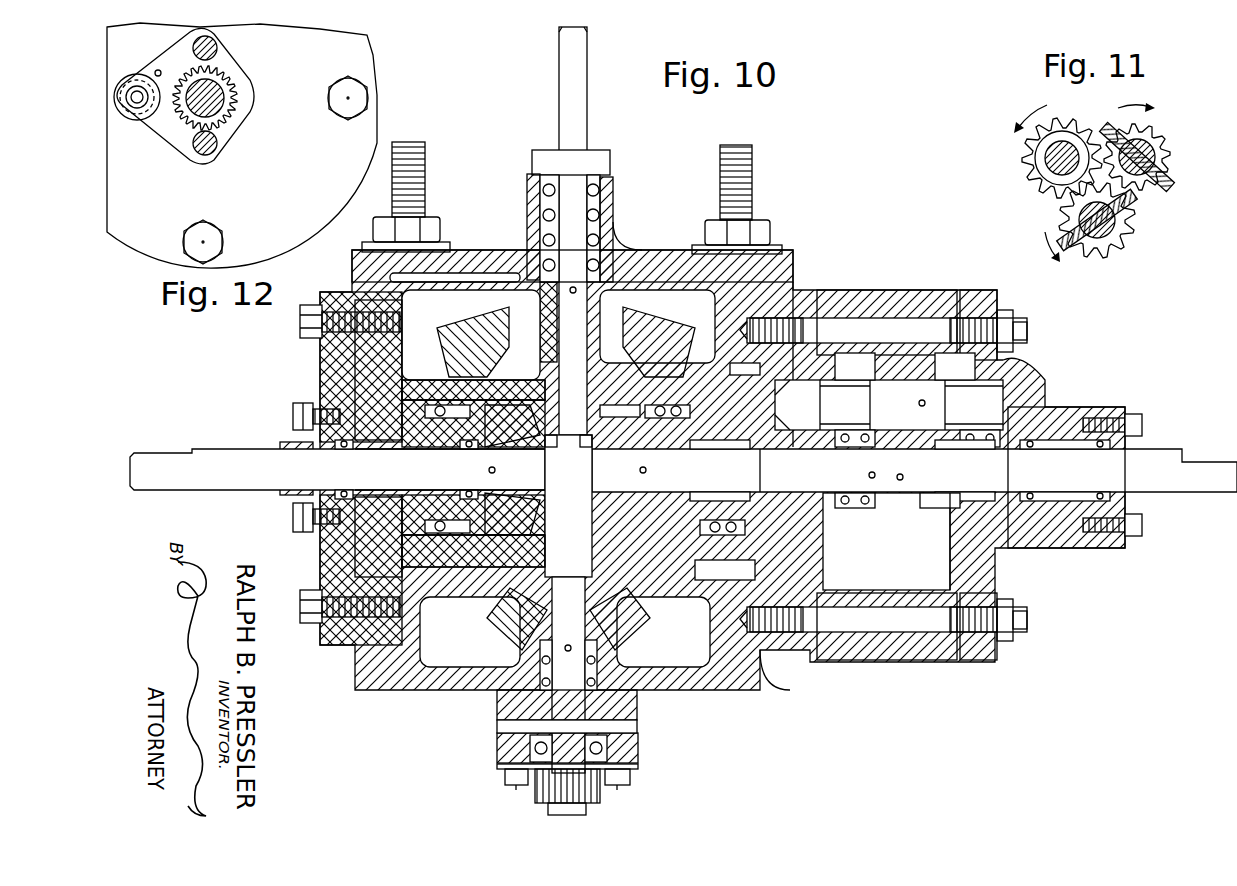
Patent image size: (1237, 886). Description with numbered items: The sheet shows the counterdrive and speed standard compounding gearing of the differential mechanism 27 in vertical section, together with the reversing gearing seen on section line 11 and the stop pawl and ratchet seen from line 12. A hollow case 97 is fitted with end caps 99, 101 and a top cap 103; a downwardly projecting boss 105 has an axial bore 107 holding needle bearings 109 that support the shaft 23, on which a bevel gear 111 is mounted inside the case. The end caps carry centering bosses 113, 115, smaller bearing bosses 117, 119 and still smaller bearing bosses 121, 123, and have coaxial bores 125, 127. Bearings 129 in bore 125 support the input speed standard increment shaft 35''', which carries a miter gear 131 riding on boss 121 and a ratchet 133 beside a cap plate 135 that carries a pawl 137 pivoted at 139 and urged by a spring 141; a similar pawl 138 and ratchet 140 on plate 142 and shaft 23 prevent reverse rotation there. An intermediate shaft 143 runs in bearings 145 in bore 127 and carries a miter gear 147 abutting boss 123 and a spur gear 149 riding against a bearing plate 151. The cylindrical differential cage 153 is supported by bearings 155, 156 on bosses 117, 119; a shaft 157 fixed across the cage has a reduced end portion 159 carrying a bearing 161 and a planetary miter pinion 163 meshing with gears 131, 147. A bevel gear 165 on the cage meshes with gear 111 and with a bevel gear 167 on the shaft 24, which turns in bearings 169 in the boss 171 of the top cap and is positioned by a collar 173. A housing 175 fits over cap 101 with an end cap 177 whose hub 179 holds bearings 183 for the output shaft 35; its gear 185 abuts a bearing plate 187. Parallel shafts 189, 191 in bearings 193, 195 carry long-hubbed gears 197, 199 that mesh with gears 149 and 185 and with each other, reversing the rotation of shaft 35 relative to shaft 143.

In FIG. 10, the section line 11— 11 is at (922, 327).
In FIG. 10, the line 12— 12 is at (277, 403).
In FIG. 10, the shaft 23 is at (577, 623).
In FIG. 10, the shaft 24 is at (568, 108).
In FIG. 10, the differential mechanism 27 is at (787, 292).
In FIG. 11, the output or speed standard increment shaft 35 is at (1122, 258).
In FIG. 10, the output or speed standard increment shaft 35 is at (914, 454).
In FIG. 12, the input speed standard increment shaft 35''' is at (257, 132).
In FIG. 10, the input speed standard increment shaft 35''' is at (337, 456).
In FIG. 10, the hollow case 97 is at (697, 687).
In FIG. 10, the end cap 99 is at (330, 292).
In FIG. 10, the end cap 101 is at (807, 303).
In FIG. 10, the top cap 103 is at (636, 257).
In FIG. 10, the boss 105 is at (495, 742).
In FIG. 10, the axial bore 107 is at (545, 714).
In FIG. 10, the needle bearings 109 is at (547, 681).
In FIG. 10, the bevel gear 111 is at (498, 603).
In FIG. 10, the centering boss 113 is at (408, 360).
In FIG. 10, the centering boss 115 is at (745, 362).
In FIG. 10, the bearing boss 117 is at (436, 418).
In FIG. 10, the bearing boss 119 is at (708, 452).
In FIG. 10, the bearing boss 121 is at (476, 410).
In FIG. 10, the bearing boss 123 is at (697, 430).
In FIG. 10, the bore 125 is at (395, 484).
In FIG. 10, the bore 127 is at (722, 503).
In FIG. 10, the bearings 129 is at (350, 477).
In FIG. 10, the miter gear 131 is at (507, 513).
In FIG. 12, the ratchet 133 is at (233, 88).
In FIG. 10, the ratchet 133 is at (285, 492).
In FIG. 12, the cap plate 135 is at (217, 52).
In FIG. 10, the cap plate 135 is at (311, 409).
In FIG. 12, the pawl 137 is at (172, 66).
In FIG. 10, the pawl 137 is at (288, 441).
In FIG. 10, the pawl 138 is at (528, 789).
In FIG. 12, the pivot 139 is at (136, 101).
In FIG. 10, the ratchet 140 is at (602, 805).
In FIG. 12, the spring 141 is at (173, 75).
In FIG. 10, the plate 142 is at (637, 768).
In FIG. 10, the intermediate shaft 143 is at (808, 483).
In FIG. 10, the bearings 145 is at (692, 457).
In FIG. 10, the miter gear 147 is at (628, 510).
In FIG. 10, the spur gear 149 is at (840, 505).
In FIG. 10, the bearing plate 151 is at (863, 528).
In FIG. 10, the differential cage 153 is at (450, 383).
In FIG. 10, the bearing 155 is at (434, 524).
In FIG. 10, the bearing 156 is at (733, 560).
In FIG. 10, the shaft 157 is at (583, 515).
In FIG. 10, the reduced end portion 159 is at (557, 436).
In FIG. 10, the bearing 161 is at (545, 455).
In FIG. 10, the planetary miter pinion 163 is at (624, 417).
In FIG. 10, the bevel gear 165 is at (658, 330).
In FIG. 10, the bevel gear 167 is at (620, 312).
In FIG. 10, the bearings 169 is at (614, 240).
In FIG. 10, the boss 171 is at (528, 193).
In FIG. 10, the collar 173 is at (606, 163).
In FIG. 10, the housing 175 is at (873, 290).
In FIG. 10, the end cap 177 is at (970, 298).
In FIG. 10, the hub 179 is at (1055, 413).
In FIG. 10, the bearings 183 is at (970, 455).
In FIG. 11, the gear 185 is at (1135, 230).
In FIG. 10, the gear 185 is at (918, 520).
In FIG. 10, the bearing plate 187 is at (945, 540).
In FIG. 11, the shaft 189 is at (1038, 170).
In FIG. 10, the shaft 189 is at (845, 418).
In FIG. 11, the shaft 191 is at (1160, 138).
In FIG. 10, the shaft 191 is at (1005, 456).
In FIG. 10, the bearings 193 is at (818, 382).
In FIG. 10, the bearings 195 is at (977, 384).
In FIG. 11, the gear 197 is at (1036, 144).
In FIG. 10, the gear 197 is at (863, 385).
In FIG. 11, the gear 199 is at (1170, 160).
In FIG. 10, the gear 199 is at (927, 380).